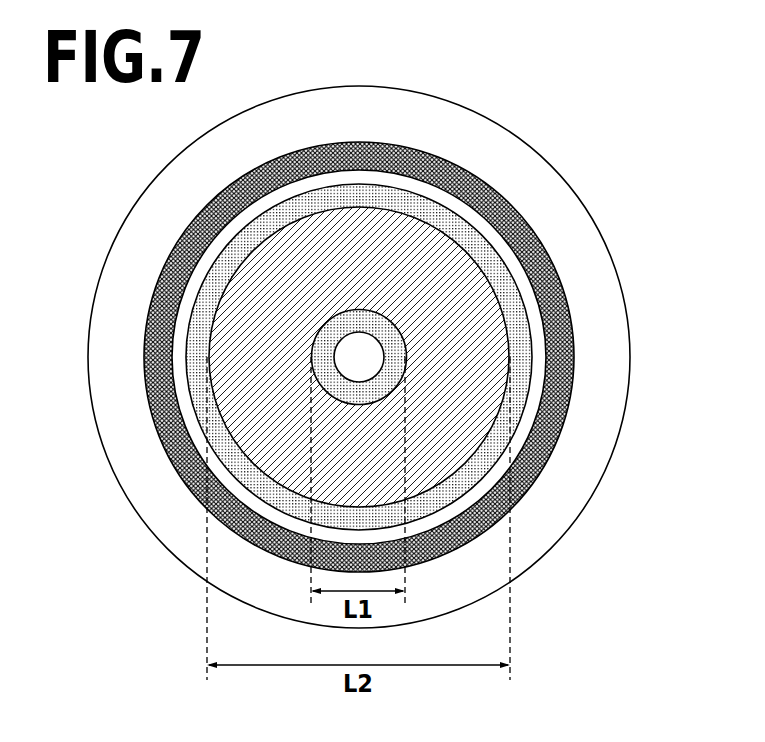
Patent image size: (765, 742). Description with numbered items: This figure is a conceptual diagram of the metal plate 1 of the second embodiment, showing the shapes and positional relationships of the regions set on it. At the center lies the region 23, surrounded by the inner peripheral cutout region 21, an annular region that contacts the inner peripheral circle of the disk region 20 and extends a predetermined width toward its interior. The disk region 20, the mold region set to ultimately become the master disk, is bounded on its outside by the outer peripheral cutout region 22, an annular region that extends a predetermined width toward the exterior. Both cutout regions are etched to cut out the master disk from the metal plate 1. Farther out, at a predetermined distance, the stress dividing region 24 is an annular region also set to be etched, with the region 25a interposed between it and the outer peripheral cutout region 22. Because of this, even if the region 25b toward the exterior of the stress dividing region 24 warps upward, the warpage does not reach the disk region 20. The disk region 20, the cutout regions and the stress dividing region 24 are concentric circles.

The metal plate 1 is at (364, 347).
The disk region 20 is at (227, 320).
The inner peripheral cutout region 21 is at (332, 325).
The outer peripheral cutout region 22 is at (222, 270).
The region 23 is at (367, 343).
The stress dividing region 24 is at (570, 313).
The region 25a is at (510, 260).
The region 25b is at (555, 187).